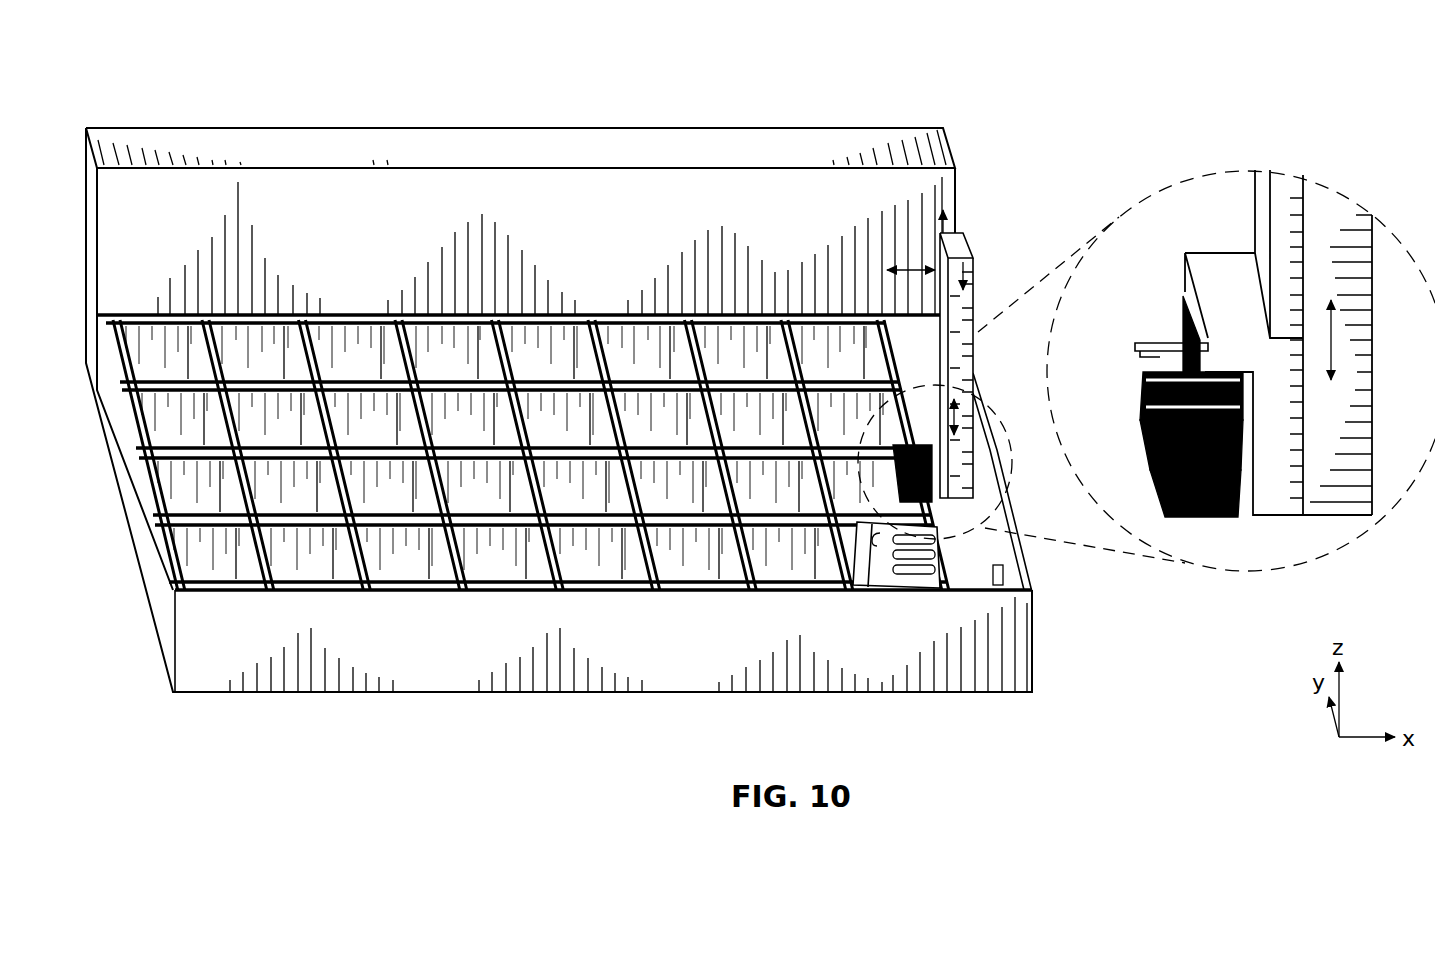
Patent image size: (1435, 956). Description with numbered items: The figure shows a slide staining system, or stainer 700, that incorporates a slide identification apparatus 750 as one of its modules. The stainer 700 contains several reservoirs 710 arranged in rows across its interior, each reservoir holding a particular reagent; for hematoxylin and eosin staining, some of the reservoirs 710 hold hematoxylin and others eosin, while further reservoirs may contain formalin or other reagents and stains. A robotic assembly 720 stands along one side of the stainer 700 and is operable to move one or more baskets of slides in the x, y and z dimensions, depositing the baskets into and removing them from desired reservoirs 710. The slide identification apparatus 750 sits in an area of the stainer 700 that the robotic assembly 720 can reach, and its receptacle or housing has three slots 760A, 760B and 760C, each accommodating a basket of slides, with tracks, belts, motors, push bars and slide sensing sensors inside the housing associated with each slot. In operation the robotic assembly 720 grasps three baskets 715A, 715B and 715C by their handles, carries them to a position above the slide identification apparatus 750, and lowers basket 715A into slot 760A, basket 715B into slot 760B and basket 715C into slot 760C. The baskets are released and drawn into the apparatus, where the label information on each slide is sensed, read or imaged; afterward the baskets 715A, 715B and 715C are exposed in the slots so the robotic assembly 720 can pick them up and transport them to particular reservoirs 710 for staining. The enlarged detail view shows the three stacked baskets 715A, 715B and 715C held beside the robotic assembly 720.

The stainer 700 is at (165, 95).
The reservoirs 710 is at (146, 350).
The basket 715A is at (1150, 418).
The basket 715B is at (1152, 452).
The basket 715C is at (1160, 490).
The robotic assembly 720 is at (962, 238).
The slide identification apparatus 750 is at (870, 548).
The slot 760A is at (945, 538).
The slot 760B is at (948, 552).
The slot 760C is at (950, 566).